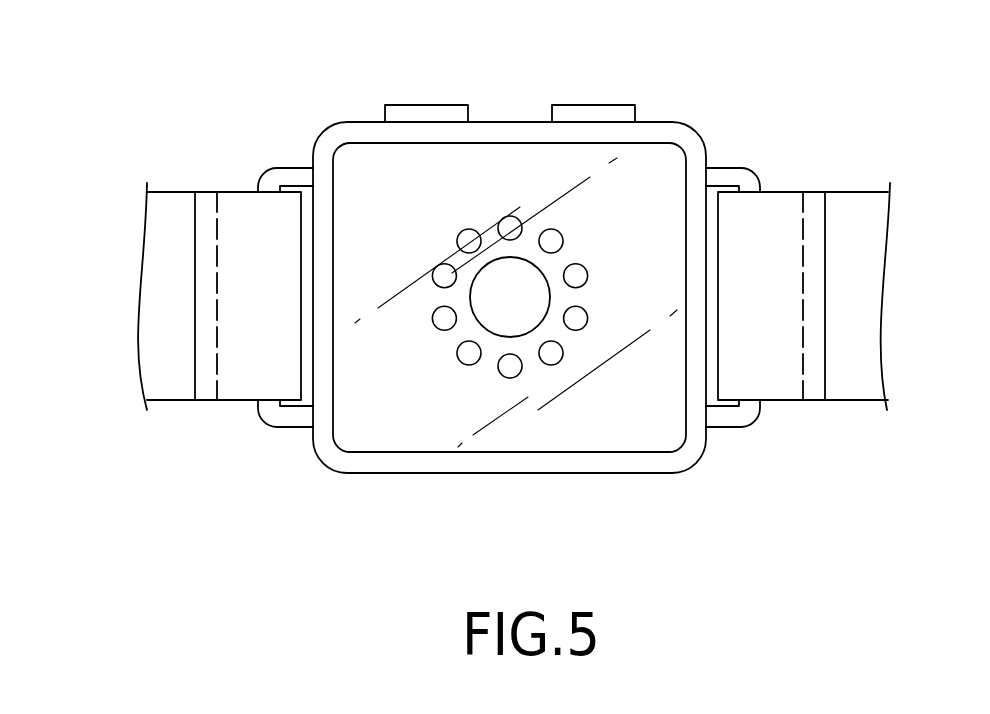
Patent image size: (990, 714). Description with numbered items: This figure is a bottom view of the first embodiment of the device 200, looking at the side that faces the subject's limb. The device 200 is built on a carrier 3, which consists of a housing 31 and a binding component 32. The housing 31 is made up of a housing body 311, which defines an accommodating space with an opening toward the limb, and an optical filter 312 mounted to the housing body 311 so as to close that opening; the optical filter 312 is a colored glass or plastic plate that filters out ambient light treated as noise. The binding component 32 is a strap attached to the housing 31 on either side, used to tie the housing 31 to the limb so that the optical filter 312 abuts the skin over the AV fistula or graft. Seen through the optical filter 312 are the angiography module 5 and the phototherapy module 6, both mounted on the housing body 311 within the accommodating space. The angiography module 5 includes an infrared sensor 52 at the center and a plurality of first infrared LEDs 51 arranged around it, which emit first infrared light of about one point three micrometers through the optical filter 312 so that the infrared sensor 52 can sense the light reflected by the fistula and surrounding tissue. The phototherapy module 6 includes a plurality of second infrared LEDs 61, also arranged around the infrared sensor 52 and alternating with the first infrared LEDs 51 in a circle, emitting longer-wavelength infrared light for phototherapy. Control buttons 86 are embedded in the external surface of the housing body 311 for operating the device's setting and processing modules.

The device 200 is at (317, 117).
The carrier 3 is at (699, 110).
The housing 31 is at (672, 122).
The housing body 311 is at (698, 143).
The optical filter 312 is at (512, 162).
The control buttons 86 is at (427, 105).
The binding component 32 is at (858, 228).
The angiography module 5 is at (436, 359).
The first infrared light-emitting diodes 51 is at (588, 273).
The infrared sensor 52 is at (503, 328).
The phototherapy module 6 is at (606, 318).
The second infrared LEDs 61 is at (580, 323).